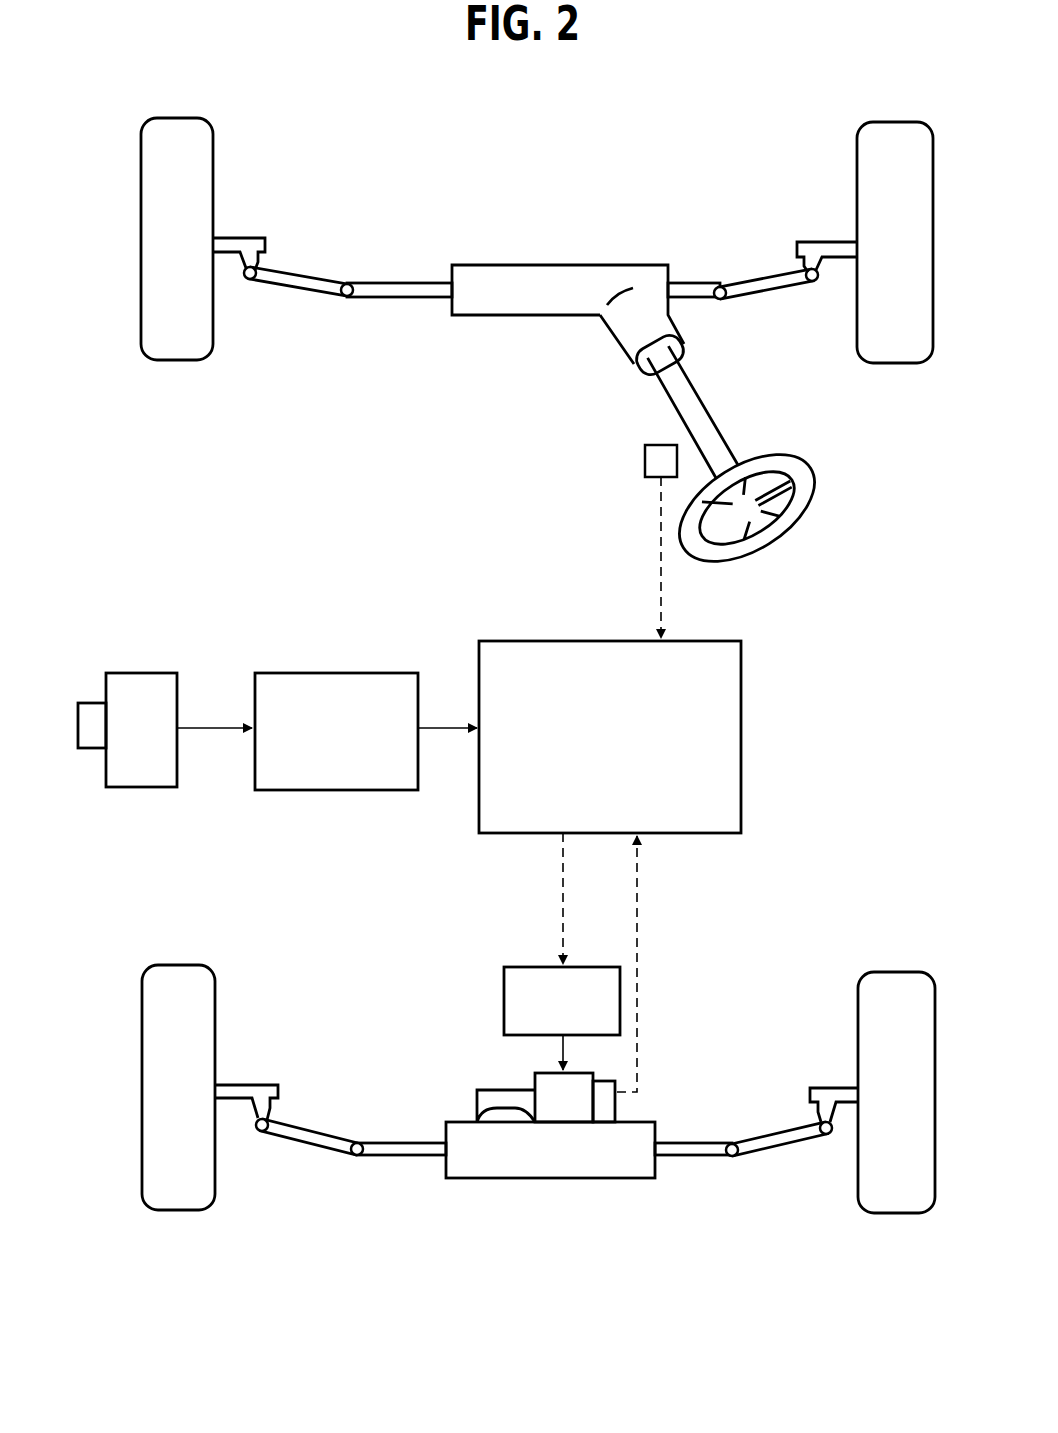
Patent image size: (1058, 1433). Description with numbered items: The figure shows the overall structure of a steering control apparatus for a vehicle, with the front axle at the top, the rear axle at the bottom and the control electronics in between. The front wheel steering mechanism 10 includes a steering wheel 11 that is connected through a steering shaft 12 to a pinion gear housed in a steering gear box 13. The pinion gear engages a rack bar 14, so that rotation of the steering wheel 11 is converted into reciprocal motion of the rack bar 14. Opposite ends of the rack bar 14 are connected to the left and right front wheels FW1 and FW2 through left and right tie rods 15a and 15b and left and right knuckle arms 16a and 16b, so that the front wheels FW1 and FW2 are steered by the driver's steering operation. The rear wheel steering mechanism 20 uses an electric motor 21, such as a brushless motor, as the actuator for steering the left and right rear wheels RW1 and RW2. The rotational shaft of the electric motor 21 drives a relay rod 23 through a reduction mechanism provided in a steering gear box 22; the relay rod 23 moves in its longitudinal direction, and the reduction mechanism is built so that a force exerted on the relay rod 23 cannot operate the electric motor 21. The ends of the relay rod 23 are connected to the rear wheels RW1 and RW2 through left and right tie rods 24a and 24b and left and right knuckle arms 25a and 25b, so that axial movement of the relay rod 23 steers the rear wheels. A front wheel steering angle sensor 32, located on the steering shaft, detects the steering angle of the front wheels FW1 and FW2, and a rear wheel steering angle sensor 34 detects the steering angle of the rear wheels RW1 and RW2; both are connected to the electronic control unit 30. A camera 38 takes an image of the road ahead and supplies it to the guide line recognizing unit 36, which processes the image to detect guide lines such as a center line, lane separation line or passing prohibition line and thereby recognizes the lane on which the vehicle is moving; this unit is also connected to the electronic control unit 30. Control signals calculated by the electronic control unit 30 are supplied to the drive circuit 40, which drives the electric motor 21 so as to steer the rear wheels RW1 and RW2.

The left front wheel FW1 is at (172, 118).
The right front wheel FW2 is at (893, 122).
The left rear wheel RW1 is at (182, 1213).
The right rear wheel RW2 is at (897, 1213).
The front wheel steering mechanism 10 is at (492, 258).
The steering wheel 11 is at (810, 473).
The steering shaft 12 is at (692, 393).
The steering gear box 13 is at (597, 265).
The rack bar 14 is at (407, 283).
The left tie rod 15a is at (312, 283).
The right tie rod 15b is at (733, 284).
The left knuckle arm 16a is at (241, 238).
The right knuckle arm 16b is at (815, 242).
The rear wheel steering mechanism 20 is at (553, 1183).
The electric motor 21 is at (552, 1073).
The steering gear box 22 is at (655, 1133).
The relay rod 23 is at (393, 1142).
The left tie rod 24a is at (307, 1150).
The right tie rod 24b is at (783, 1150).
The left knuckle arm 25a is at (255, 1085).
The right knuckle arm 25b is at (825, 1088).
The electronic control unit 30 is at (741, 750).
The front wheel steering angle sensor 32 is at (645, 458).
The rear wheel steering angle sensor 34 is at (617, 1108).
The guide line recognizing unit 36 is at (330, 673).
The camera 38 is at (140, 673).
The drive circuit 40 is at (530, 967).